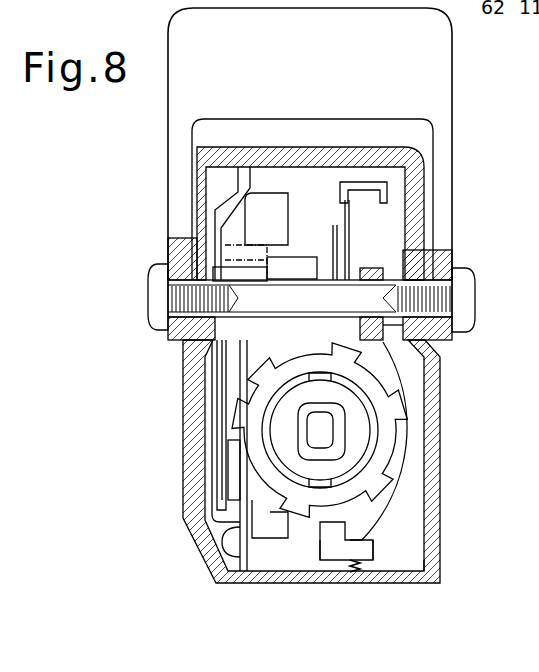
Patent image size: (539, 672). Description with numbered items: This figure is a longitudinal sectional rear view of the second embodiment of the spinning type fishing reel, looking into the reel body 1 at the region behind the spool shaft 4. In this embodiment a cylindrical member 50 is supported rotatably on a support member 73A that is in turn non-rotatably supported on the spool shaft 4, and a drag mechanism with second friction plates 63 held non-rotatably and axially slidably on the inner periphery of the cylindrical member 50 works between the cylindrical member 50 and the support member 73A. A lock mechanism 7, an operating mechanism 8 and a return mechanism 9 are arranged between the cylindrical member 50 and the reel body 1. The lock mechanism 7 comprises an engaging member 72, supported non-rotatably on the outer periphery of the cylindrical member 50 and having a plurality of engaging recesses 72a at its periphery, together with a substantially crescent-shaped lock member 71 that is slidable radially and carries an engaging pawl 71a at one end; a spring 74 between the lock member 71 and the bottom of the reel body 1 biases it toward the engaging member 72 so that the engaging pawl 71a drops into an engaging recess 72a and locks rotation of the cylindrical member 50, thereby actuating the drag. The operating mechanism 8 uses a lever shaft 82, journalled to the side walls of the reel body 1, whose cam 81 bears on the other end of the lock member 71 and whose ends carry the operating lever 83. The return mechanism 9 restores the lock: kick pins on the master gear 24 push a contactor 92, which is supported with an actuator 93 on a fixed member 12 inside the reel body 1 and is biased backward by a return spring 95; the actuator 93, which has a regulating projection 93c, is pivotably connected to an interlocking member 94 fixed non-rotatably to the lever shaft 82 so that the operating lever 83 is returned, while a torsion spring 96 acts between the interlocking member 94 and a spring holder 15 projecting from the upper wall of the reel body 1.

The reel body 1 is at (445, 382).
The spool shaft 4 is at (335, 430).
The lock mechanism 7 is at (317, 522).
The operating mechanism 8 is at (440, 247).
The return mechanism 9 is at (220, 462).
The fixed member 12 is at (195, 376).
The spring holder 15 is at (386, 172).
The master gear 24 is at (243, 240).
The cylindrical member 50 is at (385, 475).
The second friction plates 63 is at (365, 463).
The lock member 71 is at (426, 572).
The engaging pawl 71a is at (326, 562).
The engaging member 72 is at (372, 500).
The engaging recesses 72a is at (385, 558).
The support member 73A is at (340, 440).
The spring 74 is at (360, 572).
The cam 81 is at (456, 336).
The lever shaft 82 is at (355, 286).
The operating lever 83 is at (445, 167).
The contactor 92 is at (224, 487).
The actuator 93 is at (222, 452).
The regulating projection 93c is at (238, 433).
The interlocking member 94 is at (258, 272).
The return spring 95 is at (208, 525).
The torsion spring 96 is at (340, 192).